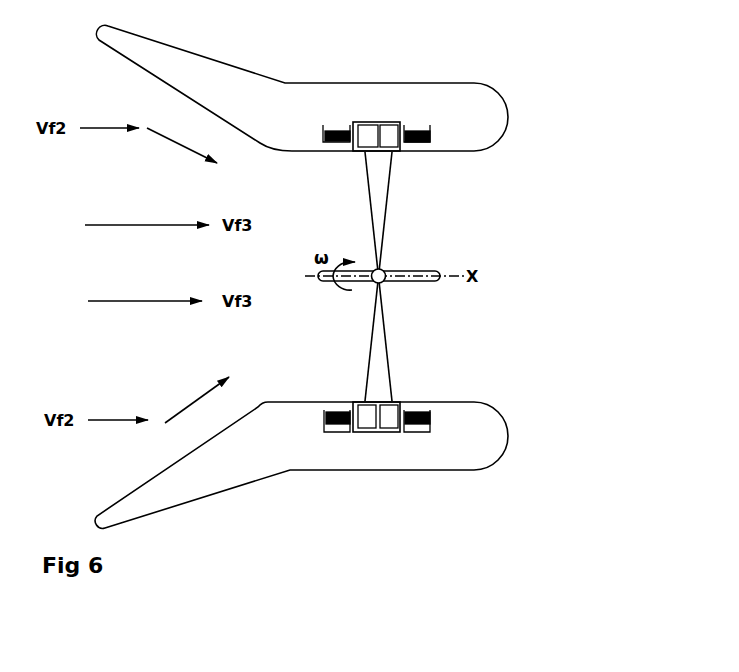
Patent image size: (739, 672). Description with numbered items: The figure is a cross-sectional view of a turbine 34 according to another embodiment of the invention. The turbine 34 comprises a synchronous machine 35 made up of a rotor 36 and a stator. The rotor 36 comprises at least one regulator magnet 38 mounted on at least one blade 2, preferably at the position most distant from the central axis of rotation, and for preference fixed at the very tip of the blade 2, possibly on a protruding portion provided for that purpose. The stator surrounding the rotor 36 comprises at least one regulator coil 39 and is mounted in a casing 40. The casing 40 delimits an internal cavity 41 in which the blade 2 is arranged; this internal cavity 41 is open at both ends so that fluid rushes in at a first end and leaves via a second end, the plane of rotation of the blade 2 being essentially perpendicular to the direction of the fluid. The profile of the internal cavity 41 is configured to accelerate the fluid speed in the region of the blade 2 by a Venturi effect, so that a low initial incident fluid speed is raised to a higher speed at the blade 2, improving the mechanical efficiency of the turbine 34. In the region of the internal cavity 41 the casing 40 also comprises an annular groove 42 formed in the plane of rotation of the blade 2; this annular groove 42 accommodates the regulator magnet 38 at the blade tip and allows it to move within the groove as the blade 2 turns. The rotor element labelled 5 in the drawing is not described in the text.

The blade 2 is at (383, 199).
The rotor 5 is at (425, 269).
The turbine 34 is at (560, 65).
The synchronous machine 35 is at (443, 475).
The rotor 36 is at (421, 337).
The regulator magnet 38 is at (381, 121).
The regulator coil 39 is at (433, 130).
The casing 40 is at (214, 57).
The internal cavity 41 is at (292, 345).
The annular groove 42 is at (403, 431).